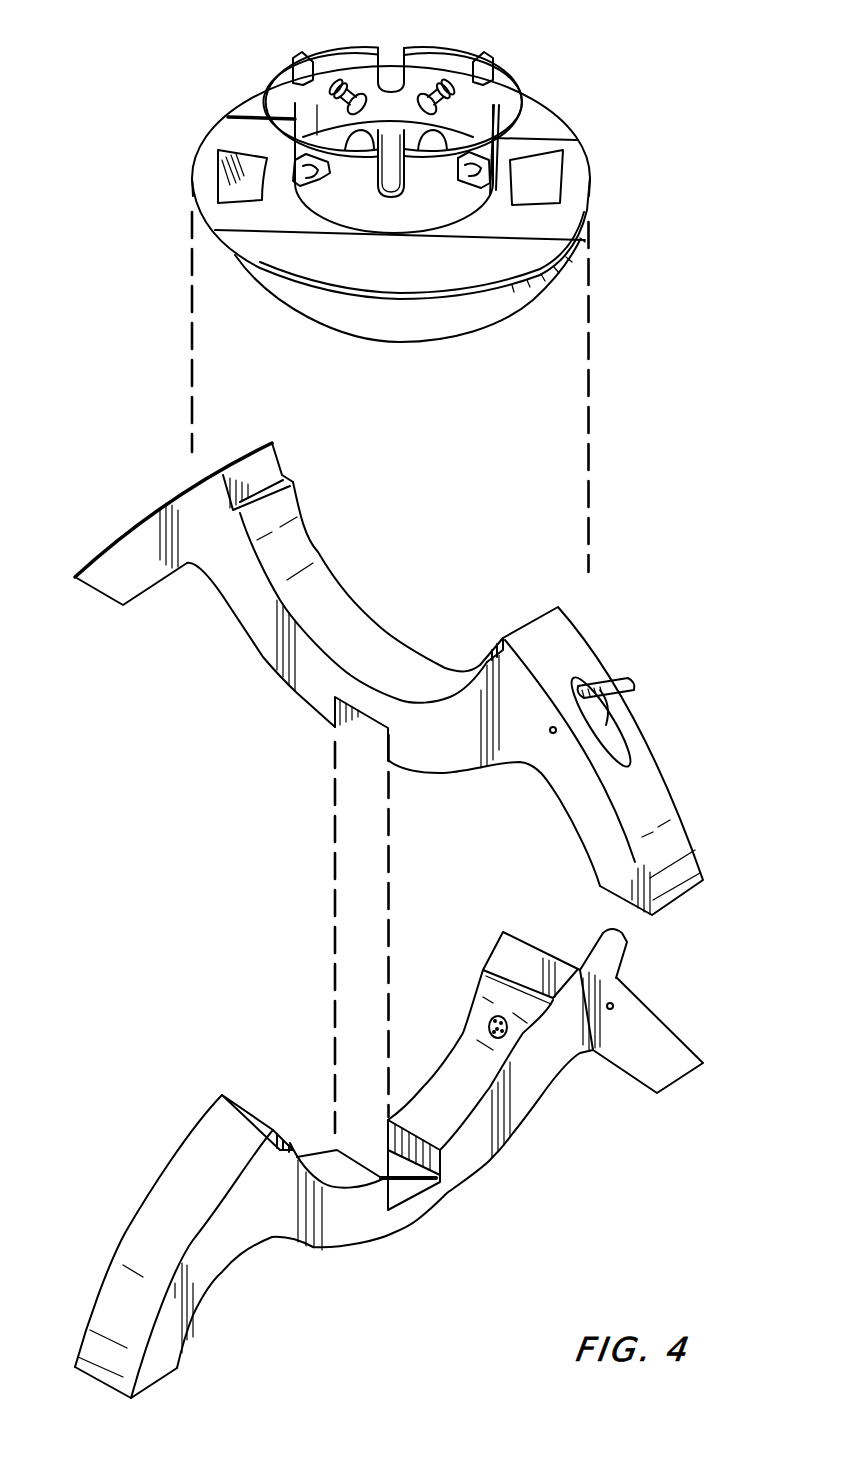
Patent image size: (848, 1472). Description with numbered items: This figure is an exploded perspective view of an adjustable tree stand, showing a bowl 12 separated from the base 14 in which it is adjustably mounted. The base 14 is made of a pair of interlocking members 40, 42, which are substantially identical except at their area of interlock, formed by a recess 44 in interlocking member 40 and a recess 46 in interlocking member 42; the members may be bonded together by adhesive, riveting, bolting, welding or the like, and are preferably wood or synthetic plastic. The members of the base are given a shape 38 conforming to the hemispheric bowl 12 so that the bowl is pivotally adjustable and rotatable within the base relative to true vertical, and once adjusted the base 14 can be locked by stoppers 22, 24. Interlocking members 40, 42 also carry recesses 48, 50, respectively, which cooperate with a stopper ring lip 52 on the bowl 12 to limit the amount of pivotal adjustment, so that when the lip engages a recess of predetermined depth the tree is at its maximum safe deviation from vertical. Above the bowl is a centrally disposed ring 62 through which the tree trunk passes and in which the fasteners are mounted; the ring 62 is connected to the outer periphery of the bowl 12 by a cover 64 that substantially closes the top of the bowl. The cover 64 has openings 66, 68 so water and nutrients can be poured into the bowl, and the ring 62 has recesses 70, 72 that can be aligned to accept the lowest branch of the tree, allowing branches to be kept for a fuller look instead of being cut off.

The bowl 12 is at (562, 103).
The base 14 is at (604, 621).
The stopper 22 is at (628, 944).
The stopper 24 is at (637, 687).
The shape of the base 38 is at (320, 563).
The interlocking member 40 is at (100, 597).
The interlocking member 42 is at (160, 1170).
The recess 44 is at (342, 730).
The recess 46 is at (440, 1182).
The recess 48 is at (283, 473).
The recess 50 is at (490, 967).
The stopper ring lip 52 is at (587, 234).
The ring 62 is at (435, 52).
The cover 64 is at (228, 117).
The opening 66 is at (214, 161).
The opening 68 is at (570, 170).
The recess 70 is at (390, 50).
The recess 72 is at (420, 188).